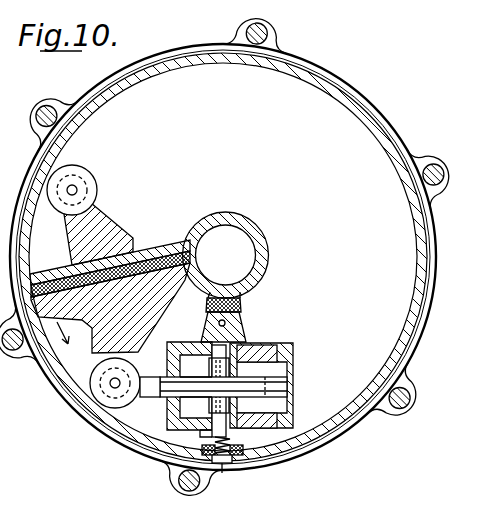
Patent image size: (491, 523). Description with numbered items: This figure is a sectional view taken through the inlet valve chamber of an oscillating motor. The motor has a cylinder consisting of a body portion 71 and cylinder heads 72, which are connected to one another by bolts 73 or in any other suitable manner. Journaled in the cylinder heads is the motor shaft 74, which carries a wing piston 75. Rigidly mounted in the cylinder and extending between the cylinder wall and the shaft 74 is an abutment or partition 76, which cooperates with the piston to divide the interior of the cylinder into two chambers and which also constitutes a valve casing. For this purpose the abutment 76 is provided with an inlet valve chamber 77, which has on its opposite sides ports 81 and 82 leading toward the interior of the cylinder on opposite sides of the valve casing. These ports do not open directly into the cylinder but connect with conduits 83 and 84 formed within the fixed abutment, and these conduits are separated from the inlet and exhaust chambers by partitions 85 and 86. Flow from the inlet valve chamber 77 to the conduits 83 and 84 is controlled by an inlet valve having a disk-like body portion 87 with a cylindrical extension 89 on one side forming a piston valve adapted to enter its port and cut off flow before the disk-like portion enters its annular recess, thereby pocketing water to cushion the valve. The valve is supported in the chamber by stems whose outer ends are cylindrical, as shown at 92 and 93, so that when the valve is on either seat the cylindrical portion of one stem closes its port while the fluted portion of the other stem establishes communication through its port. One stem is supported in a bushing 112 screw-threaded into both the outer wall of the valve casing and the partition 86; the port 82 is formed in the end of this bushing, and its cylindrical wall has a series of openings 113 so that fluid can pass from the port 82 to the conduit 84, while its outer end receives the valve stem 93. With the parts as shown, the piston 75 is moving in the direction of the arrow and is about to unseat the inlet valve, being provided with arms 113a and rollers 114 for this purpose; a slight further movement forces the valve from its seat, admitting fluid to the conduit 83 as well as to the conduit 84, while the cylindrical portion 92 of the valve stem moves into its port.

The body portion 71 is at (427, 283).
The cylinder heads 72 is at (425, 338).
The bolts 73 is at (430, 157).
The motor shaft 74 is at (255, 232).
The wing piston 75 is at (150, 258).
The abutment or partition 76 is at (244, 337).
The inlet valve chamber 77 is at (192, 444).
The port 81 is at (194, 366).
The port 82 is at (248, 368).
The conduit 83 is at (200, 400).
The conduit 84 is at (270, 352).
The partition 85 is at (203, 436).
The partition 86 is at (246, 432).
The disk-like body portion 87 is at (210, 410).
The cylindrical extension 89 is at (230, 360).
The cylindrical portion of valve stem 92 is at (150, 382).
The cylindrical portion of valve stem 93 is at (275, 383).
The bushing 112 is at (282, 398).
The openings 113 is at (97, 352).
The arms 113a is at (143, 240).
The rollers 114 is at (92, 183).